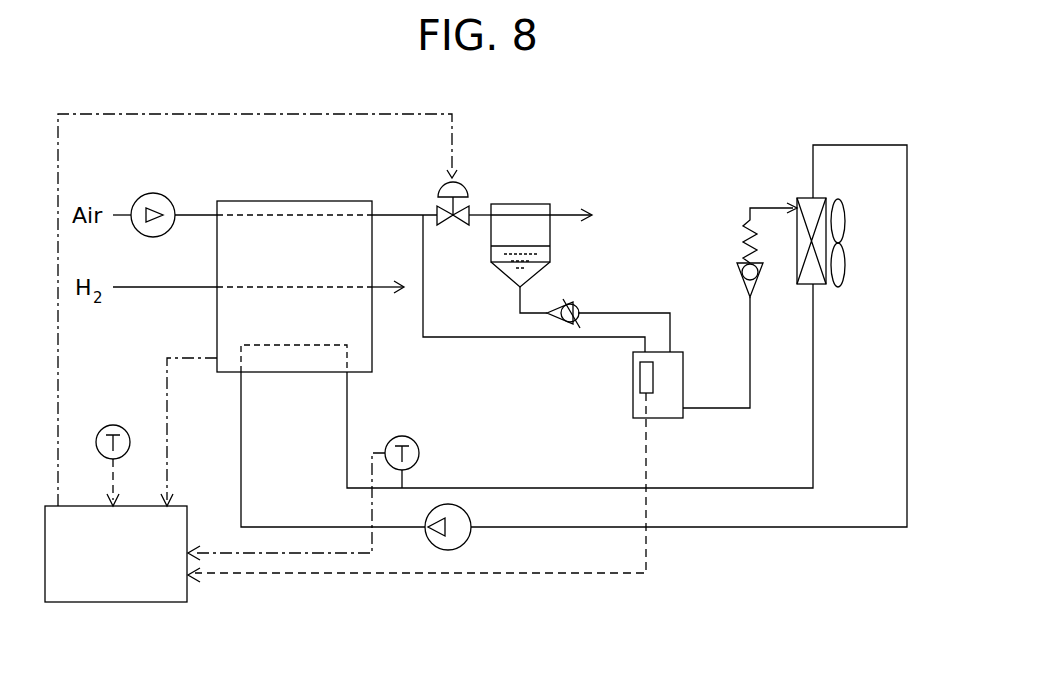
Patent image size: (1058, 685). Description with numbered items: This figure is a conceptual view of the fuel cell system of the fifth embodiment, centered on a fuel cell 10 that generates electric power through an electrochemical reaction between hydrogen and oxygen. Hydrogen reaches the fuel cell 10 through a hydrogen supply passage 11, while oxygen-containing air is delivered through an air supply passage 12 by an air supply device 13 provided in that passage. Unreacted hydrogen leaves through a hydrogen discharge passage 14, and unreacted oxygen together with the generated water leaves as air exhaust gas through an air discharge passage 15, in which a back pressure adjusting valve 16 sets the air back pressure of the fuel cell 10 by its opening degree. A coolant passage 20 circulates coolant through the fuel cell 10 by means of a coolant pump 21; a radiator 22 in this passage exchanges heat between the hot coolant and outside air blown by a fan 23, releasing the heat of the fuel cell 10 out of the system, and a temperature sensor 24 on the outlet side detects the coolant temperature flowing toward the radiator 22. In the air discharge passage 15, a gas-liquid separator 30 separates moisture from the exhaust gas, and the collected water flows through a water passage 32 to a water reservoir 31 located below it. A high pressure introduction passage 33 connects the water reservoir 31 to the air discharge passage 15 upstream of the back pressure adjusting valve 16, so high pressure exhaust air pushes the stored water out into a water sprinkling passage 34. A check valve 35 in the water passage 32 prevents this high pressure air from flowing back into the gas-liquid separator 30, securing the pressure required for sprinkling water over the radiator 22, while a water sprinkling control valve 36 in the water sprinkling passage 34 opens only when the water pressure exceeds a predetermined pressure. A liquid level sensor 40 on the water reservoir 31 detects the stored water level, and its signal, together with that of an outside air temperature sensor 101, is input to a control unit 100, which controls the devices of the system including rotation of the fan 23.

The fuel cell 10 is at (296, 198).
The hydrogen supply passage 11 is at (160, 289).
The air supply passage 12 is at (203, 210).
The air supply device 13 is at (142, 196).
The hydrogen discharge passage 14 is at (380, 291).
The air discharge passage 15 is at (400, 212).
The back pressure adjusting valve 16 is at (463, 183).
The coolant passage 20 is at (812, 529).
The coolant pump 21 is at (456, 548).
The radiator 22 is at (803, 197).
The fan 23 is at (845, 265).
The temperature sensor 24 is at (420, 453).
The gas-liquid separator 30 is at (535, 202).
The water reservoir 31 is at (667, 420).
The water passage 32 is at (645, 311).
The high pressure introduction passage 33 is at (540, 339).
The water sprinkling passage 34 is at (718, 410).
The check valve 35 is at (560, 300).
The water sprinkling control valve 36 is at (742, 270).
The liquid level sensor 40 is at (640, 380).
The control unit 100 is at (127, 603).
The outside air temperature sensor 101 is at (110, 425).